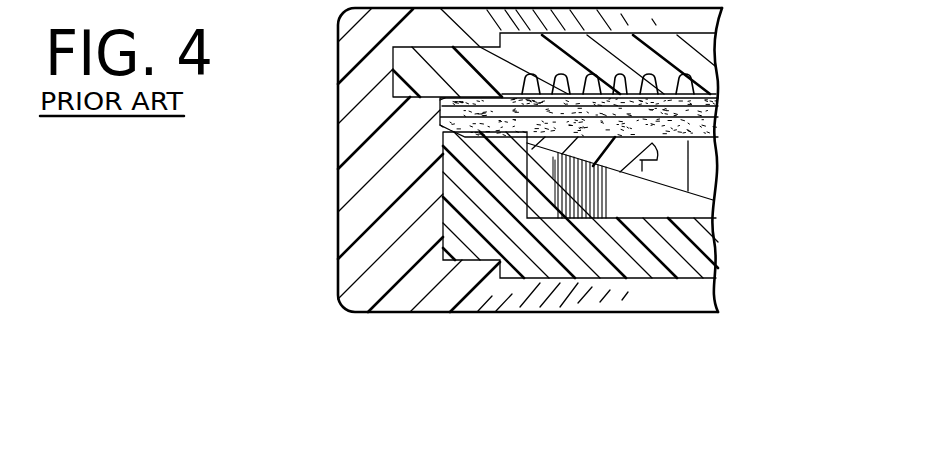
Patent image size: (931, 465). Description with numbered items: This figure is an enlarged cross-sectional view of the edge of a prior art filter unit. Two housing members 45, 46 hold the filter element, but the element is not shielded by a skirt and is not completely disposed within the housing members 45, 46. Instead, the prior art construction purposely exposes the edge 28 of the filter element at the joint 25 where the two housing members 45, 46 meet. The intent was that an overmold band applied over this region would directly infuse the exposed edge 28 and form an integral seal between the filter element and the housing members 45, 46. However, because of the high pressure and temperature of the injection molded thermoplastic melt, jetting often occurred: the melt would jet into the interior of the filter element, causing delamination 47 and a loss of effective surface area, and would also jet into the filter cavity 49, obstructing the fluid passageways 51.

The joint 25 is at (437, 120).
The edge of the filter element 28 is at (437, 113).
The housing member 45 is at (718, 240).
The housing member 46 is at (722, 56).
The delamination 47 is at (713, 127).
The filter cavity 49 is at (655, 158).
The fluid passageways 51 is at (627, 81).